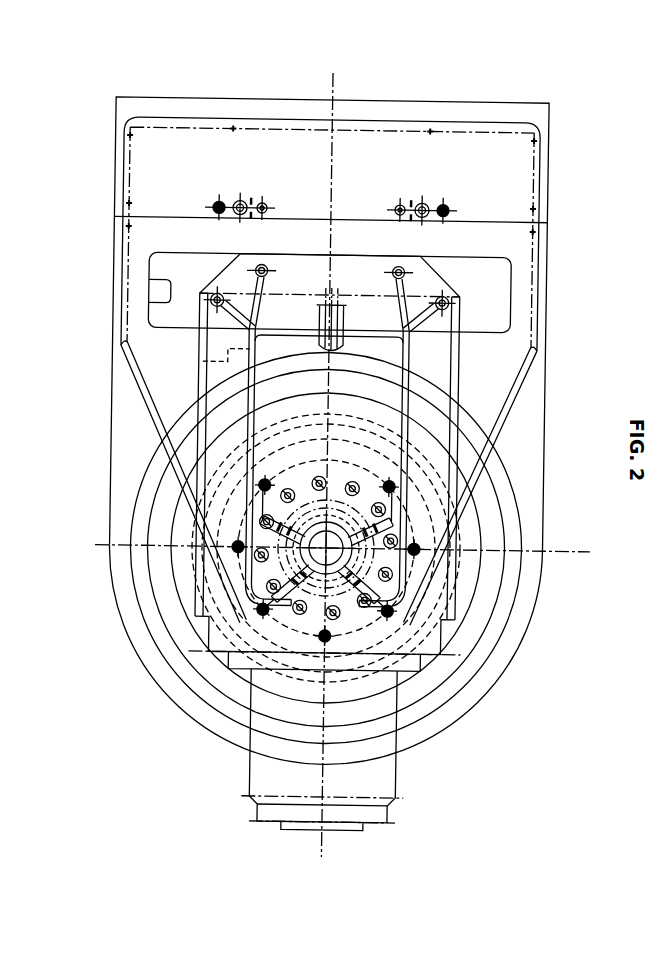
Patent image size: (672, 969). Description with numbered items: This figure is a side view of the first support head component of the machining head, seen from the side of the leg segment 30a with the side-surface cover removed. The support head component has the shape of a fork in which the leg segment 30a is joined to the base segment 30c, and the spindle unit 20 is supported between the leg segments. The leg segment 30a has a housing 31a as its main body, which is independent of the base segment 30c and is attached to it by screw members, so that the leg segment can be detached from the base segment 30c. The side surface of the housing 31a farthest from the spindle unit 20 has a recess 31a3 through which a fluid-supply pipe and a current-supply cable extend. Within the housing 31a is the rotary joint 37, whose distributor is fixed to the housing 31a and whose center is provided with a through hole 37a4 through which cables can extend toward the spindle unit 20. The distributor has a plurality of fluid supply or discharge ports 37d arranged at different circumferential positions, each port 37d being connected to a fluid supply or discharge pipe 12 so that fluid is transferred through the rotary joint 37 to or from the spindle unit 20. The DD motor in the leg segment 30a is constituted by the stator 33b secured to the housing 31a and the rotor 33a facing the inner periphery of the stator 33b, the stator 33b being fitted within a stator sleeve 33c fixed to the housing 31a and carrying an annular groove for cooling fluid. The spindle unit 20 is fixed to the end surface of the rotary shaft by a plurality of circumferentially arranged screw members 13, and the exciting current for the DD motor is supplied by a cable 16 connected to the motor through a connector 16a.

The base segment 30c is at (210, 114).
The leg segment 30a is at (182, 721).
The housing 31a is at (463, 727).
The recess 31a3 is at (144, 306).
The fluid supply or discharge pipe 12 is at (208, 413).
The cable 16 is at (458, 318).
The connector 16a is at (219, 365).
The rotary joint 37 is at (415, 532).
The through hole 37a4 is at (418, 626).
The spindle unit 20 is at (374, 786).
The rotor 33a is at (185, 562).
The stator 33b is at (175, 520).
The stator sleeve 33c is at (175, 470).
The fluid supply or discharge port 37d is at (240, 600).
The screw member 13 is at (250, 630).